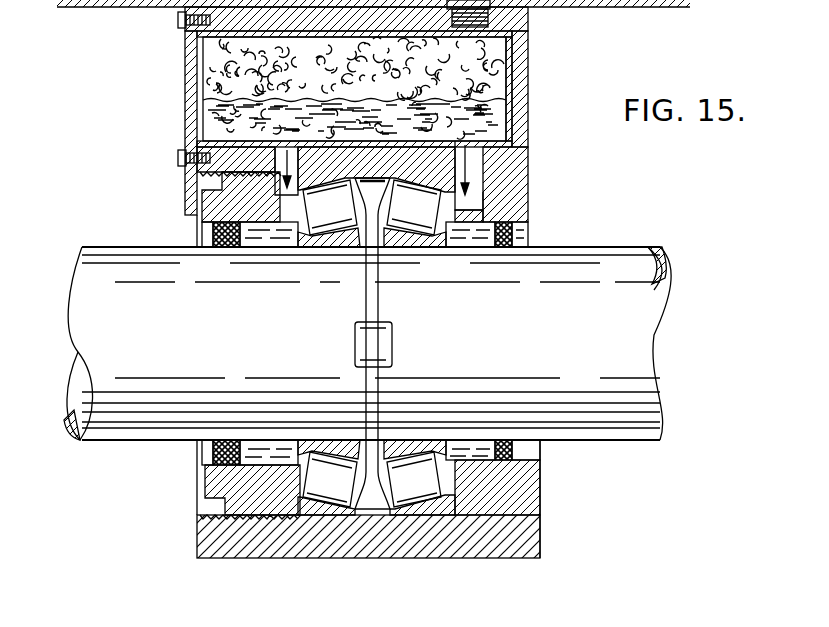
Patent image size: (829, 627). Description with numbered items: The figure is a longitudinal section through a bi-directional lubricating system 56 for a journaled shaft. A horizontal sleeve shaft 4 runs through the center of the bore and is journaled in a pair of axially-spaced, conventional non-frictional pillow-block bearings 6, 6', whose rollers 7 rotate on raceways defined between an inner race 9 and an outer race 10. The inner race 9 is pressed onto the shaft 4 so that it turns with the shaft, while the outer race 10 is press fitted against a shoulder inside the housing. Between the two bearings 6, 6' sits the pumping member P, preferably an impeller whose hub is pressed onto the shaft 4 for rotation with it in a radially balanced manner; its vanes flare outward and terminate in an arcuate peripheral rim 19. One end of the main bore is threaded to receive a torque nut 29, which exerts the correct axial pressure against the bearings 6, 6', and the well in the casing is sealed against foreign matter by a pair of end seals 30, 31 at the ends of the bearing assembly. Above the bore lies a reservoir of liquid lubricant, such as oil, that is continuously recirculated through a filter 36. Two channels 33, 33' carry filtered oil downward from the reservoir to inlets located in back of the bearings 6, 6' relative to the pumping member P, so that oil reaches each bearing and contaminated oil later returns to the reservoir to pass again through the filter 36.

The sleeve shaft 4 is at (602, 288).
The bearing 6 is at (414, 241).
The bearing 6' is at (330, 241).
The rollers 7 is at (423, 453).
The inner race 9 is at (314, 246).
The outer race 10 is at (445, 494).
The arcuate peripheral rim 19 is at (373, 342).
The torque nut 29 is at (204, 205).
The end seal 30 is at (226, 245).
The end seal 31 is at (500, 247).
The channel 33 is at (514, 175).
The channel 33' is at (225, 171).
The filter 36 is at (215, 69).
The bi-directional lubricating system 56 is at (540, 78).
The pumping member P is at (366, 295).